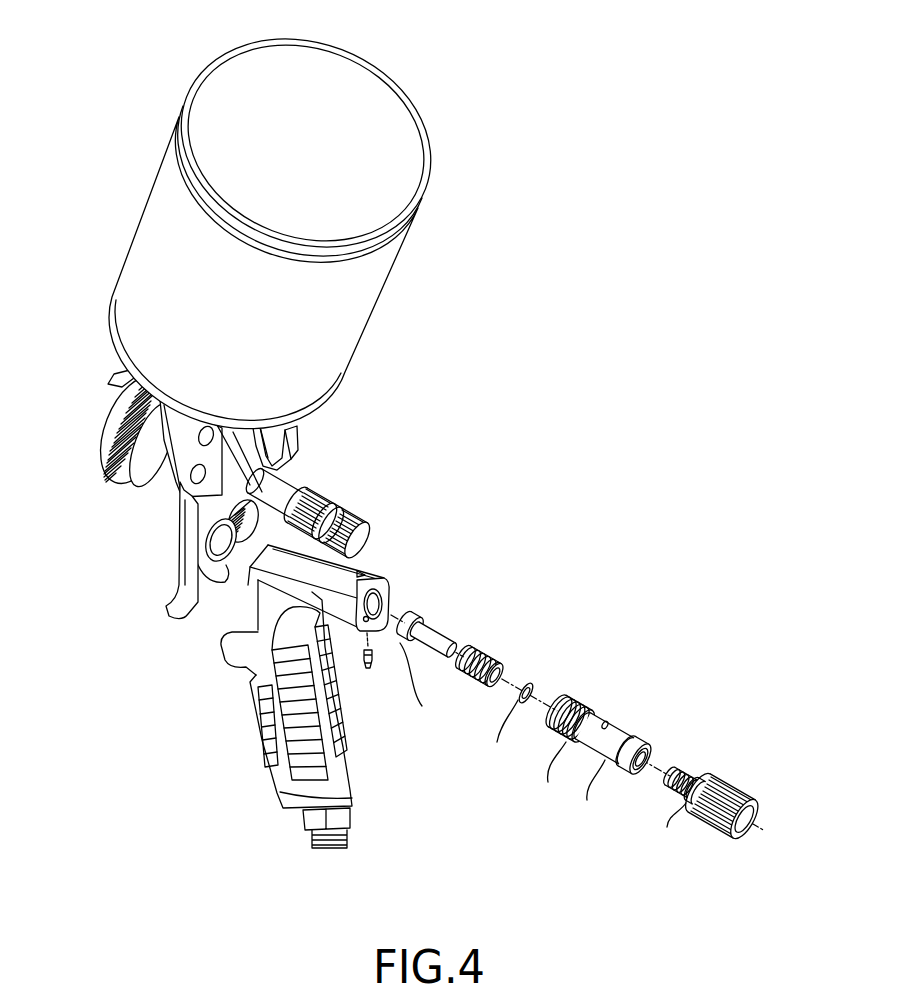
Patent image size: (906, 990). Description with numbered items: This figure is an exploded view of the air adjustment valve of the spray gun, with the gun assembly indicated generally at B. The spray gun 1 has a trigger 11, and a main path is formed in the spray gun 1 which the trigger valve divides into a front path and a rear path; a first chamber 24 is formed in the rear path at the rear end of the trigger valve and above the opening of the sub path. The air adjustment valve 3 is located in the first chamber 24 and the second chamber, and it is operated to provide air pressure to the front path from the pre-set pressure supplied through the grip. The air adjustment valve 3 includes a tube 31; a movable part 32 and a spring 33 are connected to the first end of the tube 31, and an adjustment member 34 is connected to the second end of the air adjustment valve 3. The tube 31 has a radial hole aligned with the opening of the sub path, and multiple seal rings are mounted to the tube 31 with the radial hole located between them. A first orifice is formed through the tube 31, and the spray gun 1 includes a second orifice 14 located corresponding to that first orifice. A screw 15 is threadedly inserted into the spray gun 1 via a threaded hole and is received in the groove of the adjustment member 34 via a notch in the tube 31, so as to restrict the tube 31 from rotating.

The spray gun assembly B is at (104, 176).
The spray gun 1 is at (244, 596).
The trigger 11 is at (178, 584).
The second orifice 14 is at (321, 563).
The screw 15 is at (368, 670).
The first chamber 24 is at (374, 598).
The air adjustment valve 3 is at (582, 693).
The tube 31 is at (607, 724).
The movable part 32 is at (437, 626).
The spring 33 is at (490, 660).
The adjustment member 34 is at (717, 784).